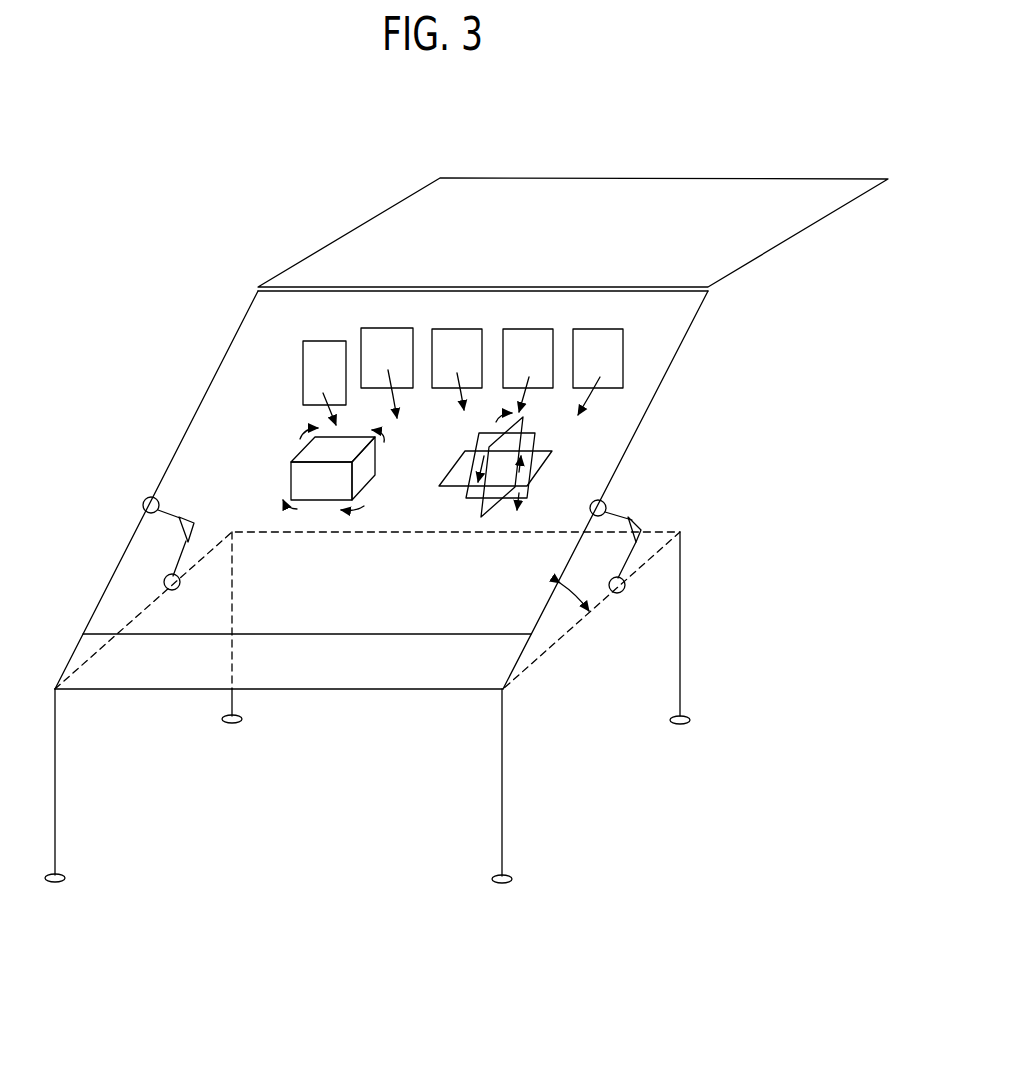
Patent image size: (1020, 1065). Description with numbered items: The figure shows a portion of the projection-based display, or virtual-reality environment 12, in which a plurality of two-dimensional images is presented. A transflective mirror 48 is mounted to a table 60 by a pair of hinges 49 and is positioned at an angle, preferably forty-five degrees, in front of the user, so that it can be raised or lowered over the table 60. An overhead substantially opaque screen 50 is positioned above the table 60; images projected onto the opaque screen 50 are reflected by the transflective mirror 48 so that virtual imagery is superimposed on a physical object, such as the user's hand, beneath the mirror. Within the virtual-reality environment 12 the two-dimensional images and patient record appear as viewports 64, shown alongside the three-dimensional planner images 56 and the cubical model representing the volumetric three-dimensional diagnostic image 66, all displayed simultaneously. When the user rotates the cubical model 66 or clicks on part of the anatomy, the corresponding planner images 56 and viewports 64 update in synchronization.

The virtual-reality environment 12 is at (663, 484).
The transflective mirror 48 is at (662, 380).
The hinges 49 is at (165, 500).
The overhead substantially opaque screen 50 is at (592, 198).
The 3D planner images 56 is at (550, 468).
The table 60 is at (435, 690).
The 2D viewports 64 is at (333, 341).
The volumetric 3D diagnostic image 66 is at (286, 471).